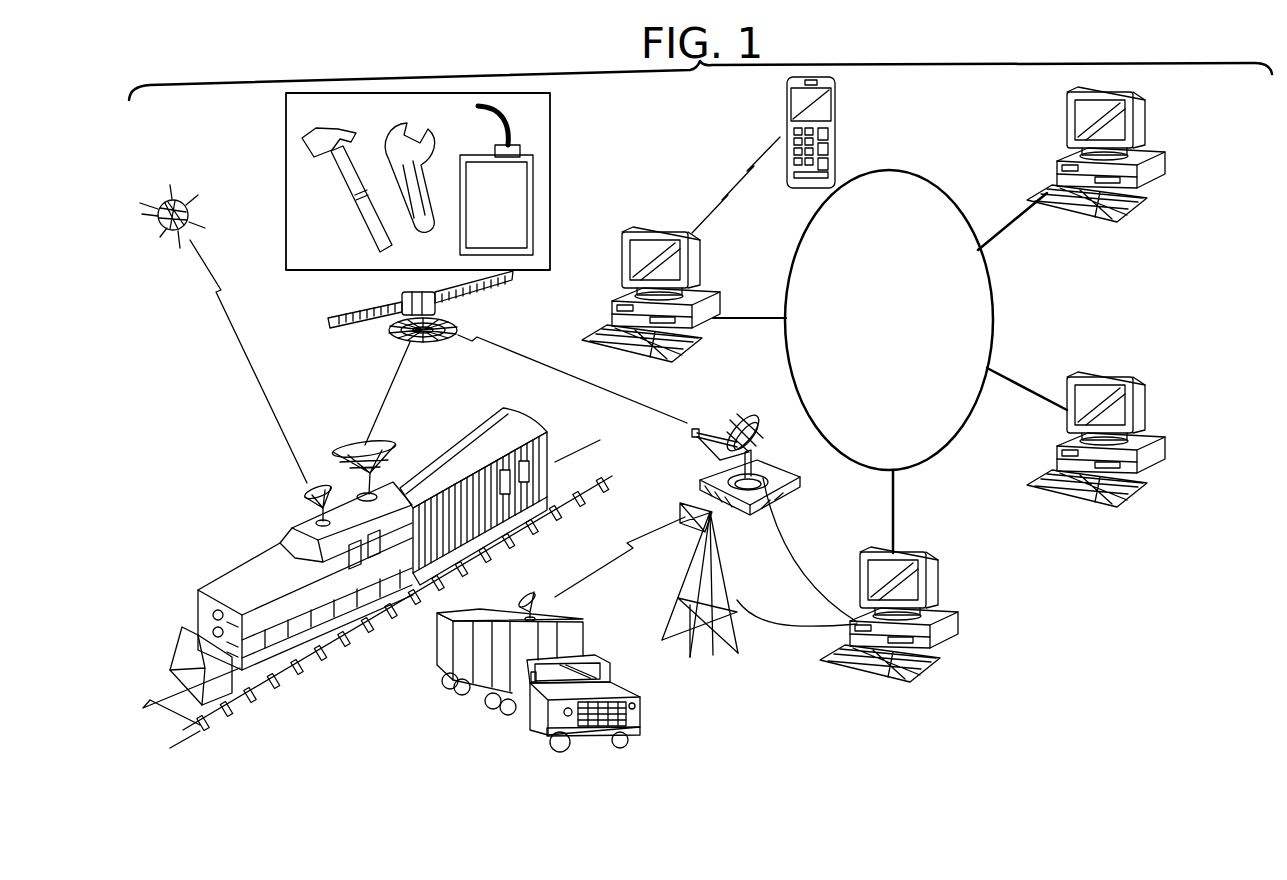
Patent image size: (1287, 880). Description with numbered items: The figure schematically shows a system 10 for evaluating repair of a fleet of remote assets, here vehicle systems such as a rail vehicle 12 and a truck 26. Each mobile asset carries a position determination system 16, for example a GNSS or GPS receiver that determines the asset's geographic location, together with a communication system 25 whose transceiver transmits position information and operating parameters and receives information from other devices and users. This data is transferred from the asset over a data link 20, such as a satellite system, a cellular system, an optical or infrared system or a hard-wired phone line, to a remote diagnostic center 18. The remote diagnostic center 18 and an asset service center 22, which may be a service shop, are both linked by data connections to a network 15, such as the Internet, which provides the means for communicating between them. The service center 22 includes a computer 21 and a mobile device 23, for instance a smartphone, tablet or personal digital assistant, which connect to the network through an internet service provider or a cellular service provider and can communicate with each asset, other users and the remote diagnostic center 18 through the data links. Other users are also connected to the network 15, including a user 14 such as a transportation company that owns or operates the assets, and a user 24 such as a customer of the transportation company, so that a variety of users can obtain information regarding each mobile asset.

The system 10 is at (1174, 576).
The rail vehicle 12 is at (230, 582).
The user 14 is at (1146, 412).
The network 15 is at (930, 462).
The position determination system 16 is at (306, 498).
The remote diagnostic center 18 is at (942, 580).
The data link 20 is at (435, 303).
The computer 21 is at (698, 291).
The asset service center 22 is at (668, 162).
The mobile device 23 is at (835, 122).
The user 24 is at (1221, 100).
The communication system 25 is at (398, 435).
The truck 26 is at (613, 684).